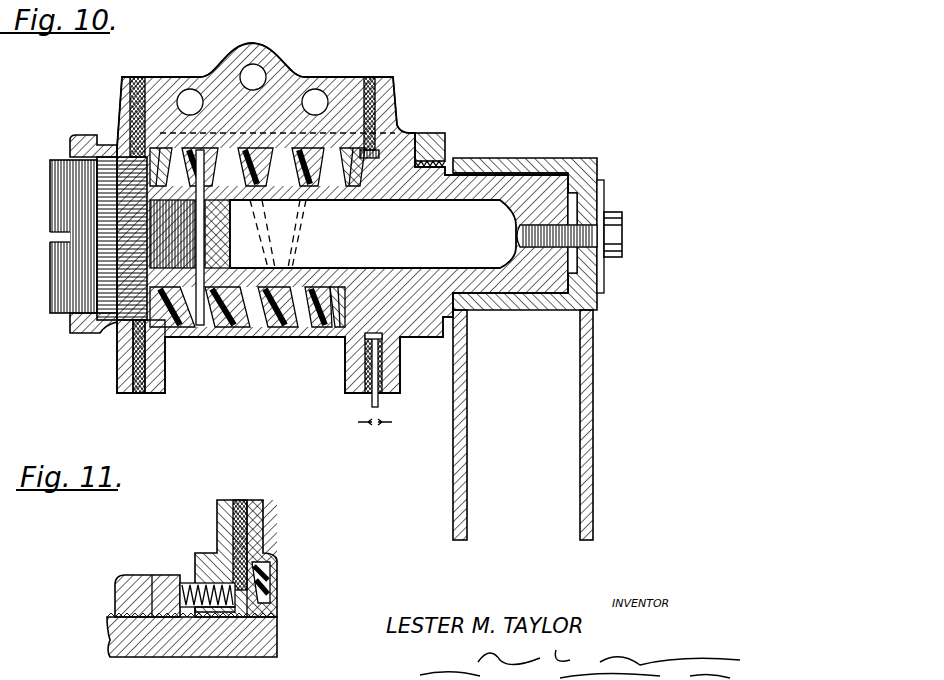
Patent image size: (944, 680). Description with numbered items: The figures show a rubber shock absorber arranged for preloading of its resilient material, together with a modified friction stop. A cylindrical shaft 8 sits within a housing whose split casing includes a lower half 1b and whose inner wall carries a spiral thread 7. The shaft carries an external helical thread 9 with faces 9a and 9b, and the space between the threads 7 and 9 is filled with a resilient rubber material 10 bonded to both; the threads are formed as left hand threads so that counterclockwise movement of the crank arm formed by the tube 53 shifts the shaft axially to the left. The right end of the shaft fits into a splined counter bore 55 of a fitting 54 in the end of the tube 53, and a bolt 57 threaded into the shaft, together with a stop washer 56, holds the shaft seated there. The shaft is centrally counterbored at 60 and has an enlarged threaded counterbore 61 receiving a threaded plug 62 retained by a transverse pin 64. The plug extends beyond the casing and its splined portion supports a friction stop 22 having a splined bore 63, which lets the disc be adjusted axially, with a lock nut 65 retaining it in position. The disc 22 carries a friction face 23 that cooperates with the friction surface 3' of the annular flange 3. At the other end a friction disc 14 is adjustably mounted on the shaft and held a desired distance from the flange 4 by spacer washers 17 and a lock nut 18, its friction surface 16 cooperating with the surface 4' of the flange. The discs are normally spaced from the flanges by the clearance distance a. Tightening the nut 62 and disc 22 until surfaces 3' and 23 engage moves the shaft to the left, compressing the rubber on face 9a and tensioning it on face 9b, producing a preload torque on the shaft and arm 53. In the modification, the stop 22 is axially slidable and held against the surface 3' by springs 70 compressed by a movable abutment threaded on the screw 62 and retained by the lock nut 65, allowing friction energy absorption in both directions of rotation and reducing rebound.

In FIG. 10, the lower half 1b is at (192, 337).
In FIG. 10, the annular flange 3 is at (163, 356).
In FIG. 10, the friction surface 3' is at (146, 369).
In FIG. 11, the friction surface 3' is at (254, 530).
In FIG. 10, the annular flange 4 is at (332, 365).
In FIG. 10, the friction surface 4' is at (356, 375).
In FIG. 10, the thread 7 is at (320, 337).
In FIG. 10, the shaft 8 is at (375, 206).
In FIG. 10, the helical thread 9 is at (222, 337).
In FIG. 10, the thread face 9a is at (257, 337).
In FIG. 10, the thread face 9b is at (292, 337).
In FIG. 10, the resilient material 10 is at (256, 337).
In FIG. 11, the resilient material 10 is at (270, 588).
In FIG. 10, the friction disc 14 is at (392, 378).
In FIG. 10, the friction surface 16 is at (378, 398).
In FIG. 10, the spacer washers 17 is at (392, 122).
In FIG. 10, the lock nut 18 is at (440, 136).
In FIG. 10, the friction stop 22 is at (118, 368).
In FIG. 11, the friction stop 22 is at (220, 512).
In FIG. 10, the friction face 23 is at (137, 395).
In FIG. 10, the tube 53 is at (578, 388).
In FIG. 10, the fitting 54 is at (598, 162).
In FIG. 10, the splined counter bore 55 is at (518, 170).
In FIG. 10, the stop washer 56 is at (607, 202).
In FIG. 10, the bolt 57 is at (623, 230).
In FIG. 10, the central counterbore 60 is at (315, 290).
In FIG. 10, the enlarged threaded counterbore 61 is at (178, 216).
In FIG. 10, the threaded plug 62 is at (60, 290).
In FIG. 11, the threaded plug 62 is at (108, 648).
In FIG. 10, the splined bore 63 is at (108, 337).
In FIG. 10, the transverse pin 64 is at (203, 259).
In FIG. 10, the lock nut 65 is at (72, 137).
In FIG. 11, the lock nut 65 is at (125, 572).
In FIG. 11, the springs 70 is at (188, 583).
In FIG. 10, the clearance distance a is at (375, 427).